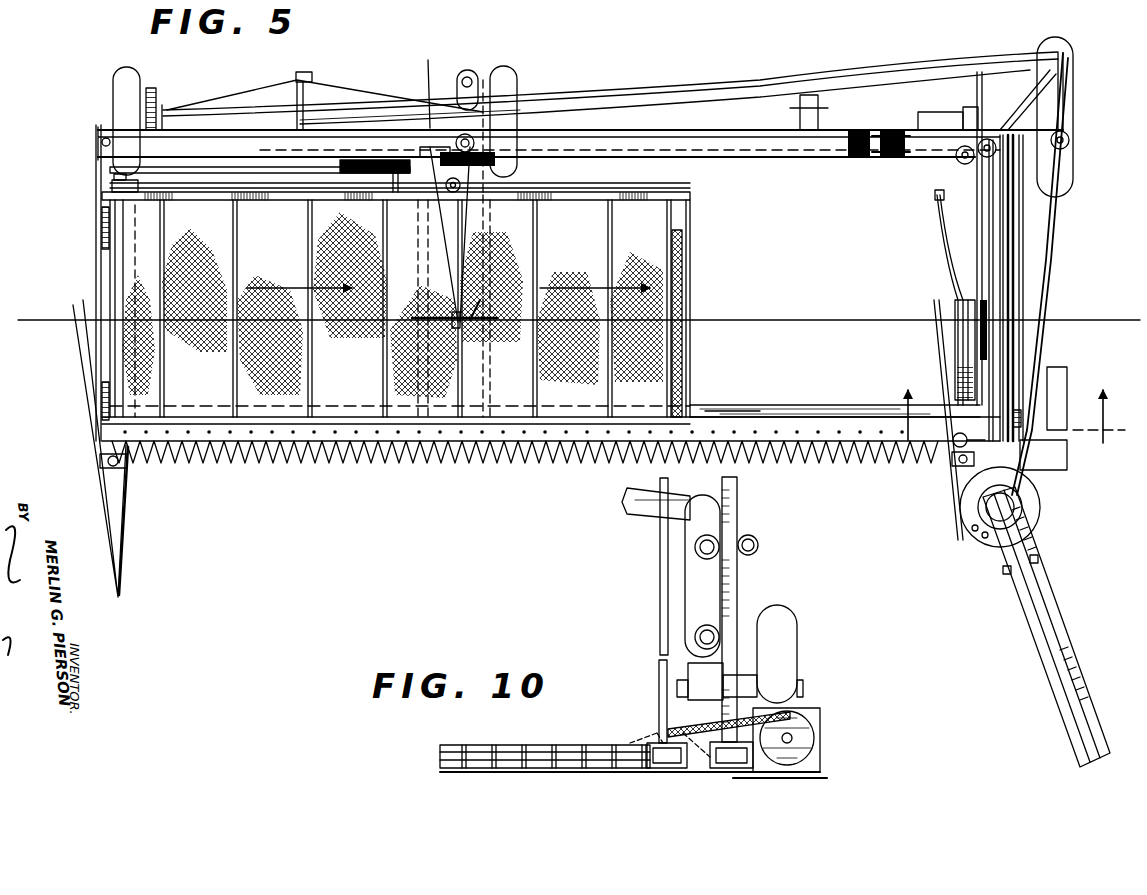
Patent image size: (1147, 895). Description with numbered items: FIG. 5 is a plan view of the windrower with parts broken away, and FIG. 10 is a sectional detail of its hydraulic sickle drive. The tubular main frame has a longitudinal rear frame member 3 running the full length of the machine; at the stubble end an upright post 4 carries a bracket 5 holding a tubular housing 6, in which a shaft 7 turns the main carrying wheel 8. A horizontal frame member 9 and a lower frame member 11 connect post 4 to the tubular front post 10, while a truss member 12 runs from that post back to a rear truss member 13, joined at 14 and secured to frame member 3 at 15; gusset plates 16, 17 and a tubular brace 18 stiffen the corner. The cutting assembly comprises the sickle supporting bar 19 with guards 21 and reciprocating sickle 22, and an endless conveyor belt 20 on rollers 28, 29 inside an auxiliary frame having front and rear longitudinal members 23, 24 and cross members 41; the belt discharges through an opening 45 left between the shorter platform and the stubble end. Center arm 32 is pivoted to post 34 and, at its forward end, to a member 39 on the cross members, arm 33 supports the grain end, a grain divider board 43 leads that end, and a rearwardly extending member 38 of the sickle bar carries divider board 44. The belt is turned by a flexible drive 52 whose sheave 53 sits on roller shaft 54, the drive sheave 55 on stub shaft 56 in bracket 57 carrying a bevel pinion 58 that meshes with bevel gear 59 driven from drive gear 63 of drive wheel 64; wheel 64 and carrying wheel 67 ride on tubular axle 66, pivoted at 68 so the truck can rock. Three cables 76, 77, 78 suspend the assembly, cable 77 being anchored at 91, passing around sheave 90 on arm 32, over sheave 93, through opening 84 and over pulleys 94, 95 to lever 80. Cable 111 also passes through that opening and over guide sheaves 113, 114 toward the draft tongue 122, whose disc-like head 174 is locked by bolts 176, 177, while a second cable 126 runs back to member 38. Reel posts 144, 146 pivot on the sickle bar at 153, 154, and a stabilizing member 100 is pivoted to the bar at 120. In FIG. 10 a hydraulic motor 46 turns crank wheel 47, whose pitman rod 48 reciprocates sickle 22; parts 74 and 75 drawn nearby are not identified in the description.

In FIG. 5, the rear frame member 3 is at (762, 158).
In FIG. 10, the rear frame member 3 is at (635, 512).
In FIG. 10, the upright frame member or post 4 is at (702, 576).
In FIG. 5, the bracket 5 is at (960, 163).
In FIG. 10, the tubular housing 6 is at (752, 680).
In FIG. 5, the shaft 7 is at (323, 100).
In FIG. 5, the main carrying wheel 8 is at (1073, 98).
In FIG. 10, the main carrying wheel 8 is at (787, 626).
In FIG. 5, the horizontal frame member 9 is at (996, 250).
In FIG. 10, the horizontal frame member 9 is at (718, 528).
In FIG. 5, the front frame member or post 10 is at (995, 397).
In FIG. 10, the horizontal frame member 11 is at (716, 617).
In FIG. 5, the truss member 12 is at (1049, 273).
In FIG. 10, the truss member 12 is at (758, 545).
In FIG. 5, the rear truss member 13 is at (912, 66).
In FIG. 5, the connection of truss members 14 is at (1066, 60).
In FIG. 5, the connection of truss member to frame member 15 is at (423, 87).
In FIG. 5, the gusset plate 16 is at (982, 96).
In FIG. 5, the gusset plate 17 is at (1020, 102).
In FIG. 5, the tubular brace element 18 is at (800, 108).
In FIG. 5, the sickle supporting bar 19 is at (777, 405).
In FIG. 5, the endless conveyor belt 20 is at (400, 308).
In FIG. 5, the guards 21 is at (326, 464).
In FIG. 5, the sickle 22 is at (482, 462).
In FIG. 10, the sickle 22 is at (560, 745).
In FIG. 5, the front longitudinal member 23 is at (692, 415).
In FIG. 5, the rear longitudinal member 24 is at (618, 200).
In FIG. 5, the conveyor roller 28 is at (136, 232).
In FIG. 5, the conveyor roller 29 is at (692, 230).
In FIG. 5, the center arm 32 is at (478, 230).
In FIG. 5, the arm 33 is at (97, 210).
In FIG. 5, the upright frame member or post 34 is at (483, 80).
In FIG. 5, the rearwardly extending member 38 is at (960, 347).
In FIG. 5, the member 39 is at (465, 334).
In FIG. 5, the cross members 41 is at (420, 272).
In FIG. 5, the grain divider board 43 is at (122, 540).
In FIG. 5, the divider board 44 is at (965, 515).
In FIG. 5, the opening 45 is at (809, 263).
In FIG. 10, the power unit 46 is at (825, 706).
In FIG. 10, the pitman or crank wheel 47 is at (803, 740).
In FIG. 10, the pitman rod 48 is at (710, 728).
In FIG. 5, the flexible drive 52 is at (240, 172).
In FIG. 5, the pulley or sheave 53 is at (126, 180).
In FIG. 5, the supporting shaft 54 is at (112, 187).
In FIG. 5, the drive pulley or sheave 55 is at (340, 190).
In FIG. 5, the stub shaft 56 is at (386, 116).
In FIG. 5, the bracket 57 is at (412, 196).
In FIG. 5, the bevel pinion 58 is at (362, 178).
In FIG. 5, the bevel gear 59 is at (398, 165).
In FIG. 5, the drive gear 63 is at (151, 88).
In FIG. 5, the drive wheel 64 is at (125, 80).
In FIG. 5, the tubular axle 66 is at (262, 110).
In FIG. 5, the carrying wheel 67 is at (508, 84).
In FIG. 5, the pivot 68 is at (306, 72).
In FIG. 5, the housing 74 is at (458, 78).
In FIG. 5, the pin 75 is at (470, 77).
In FIG. 5, the cable 76 is at (978, 195).
In FIG. 5, the cable 77 is at (710, 150).
In FIG. 5, the cable 78 is at (888, 158).
In FIG. 5, the arm 80 is at (987, 352).
In FIG. 5, the opening 84 is at (852, 157).
In FIG. 5, the sheave 90 is at (478, 185).
In FIG. 5, the anchorage 91 is at (440, 142).
In FIG. 5, the sheave 93 is at (458, 136).
In FIG. 5, the pulley 94 is at (905, 130).
In FIG. 5, the pulley 95 is at (992, 140).
In FIG. 10, the stabilizing member 100 is at (736, 575).
In FIG. 5, the cable 111 is at (95, 165).
In FIG. 5, the guide sheave 113 is at (898, 130).
In FIG. 5, the guide sheave 114 is at (1068, 136).
In FIG. 10, the pivot connection 120 is at (700, 743).
In FIG. 5, the draft tongue 122 is at (1040, 668).
In FIG. 5, the second cable 126 is at (1024, 245).
In FIG. 5, the upright supporting post 144 is at (100, 460).
In FIG. 5, the post 146 is at (956, 470).
In FIG. 10, the post 146 is at (660, 632).
In FIG. 5, the pivot connection 153 is at (118, 470).
In FIG. 5, the pivot connection 154 is at (960, 468).
In FIG. 5, the disc-like head 174 is at (954, 551).
In FIG. 5, the bolt 176 is at (1006, 572).
In FIG. 5, the bolt 177 is at (983, 492).